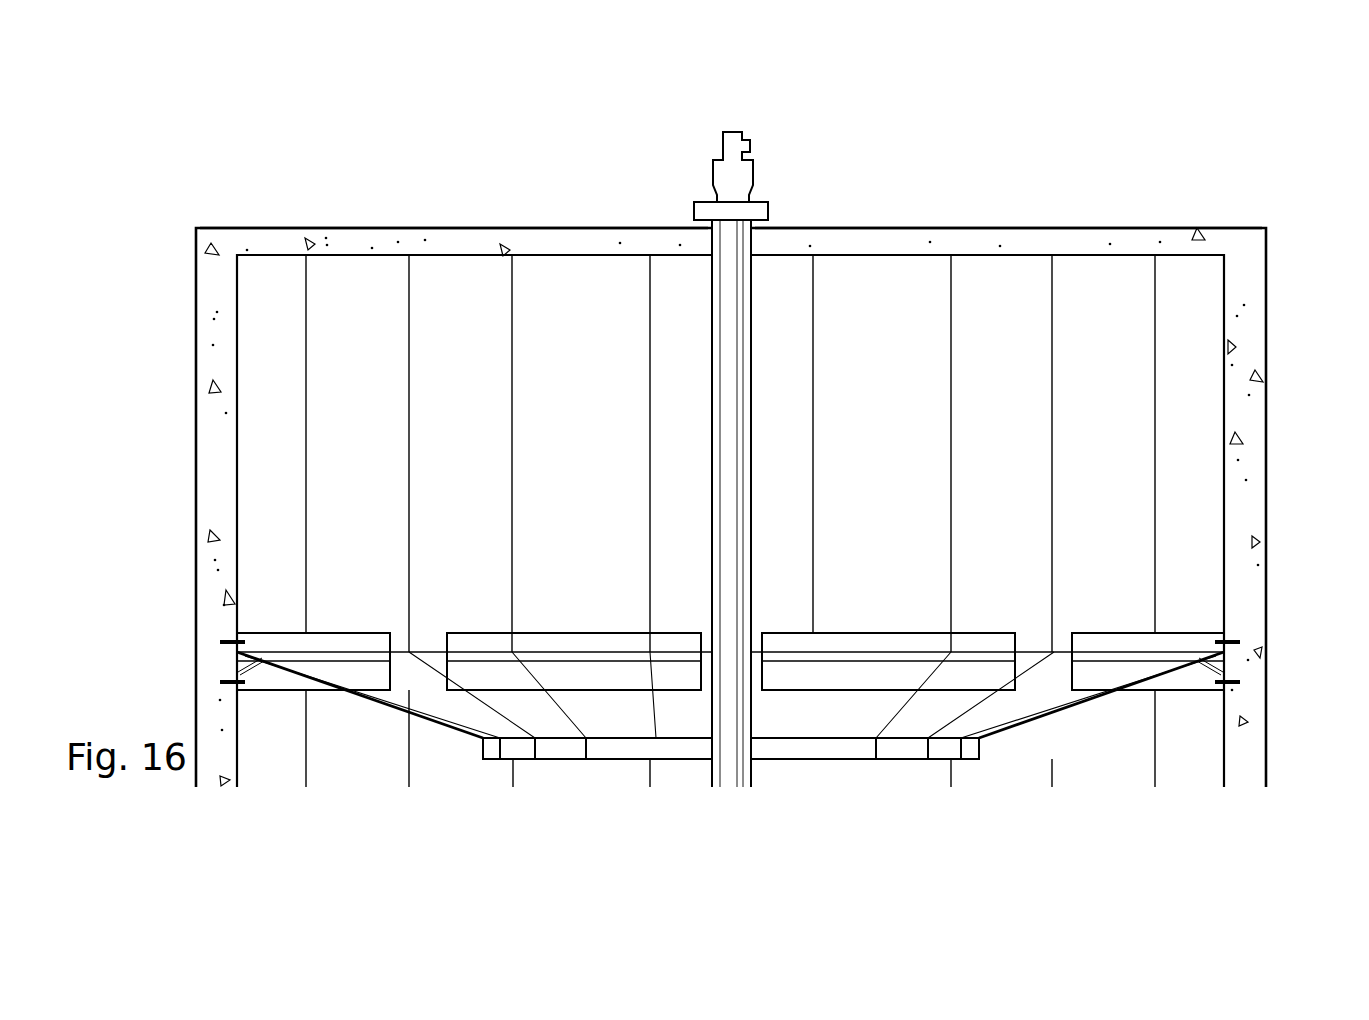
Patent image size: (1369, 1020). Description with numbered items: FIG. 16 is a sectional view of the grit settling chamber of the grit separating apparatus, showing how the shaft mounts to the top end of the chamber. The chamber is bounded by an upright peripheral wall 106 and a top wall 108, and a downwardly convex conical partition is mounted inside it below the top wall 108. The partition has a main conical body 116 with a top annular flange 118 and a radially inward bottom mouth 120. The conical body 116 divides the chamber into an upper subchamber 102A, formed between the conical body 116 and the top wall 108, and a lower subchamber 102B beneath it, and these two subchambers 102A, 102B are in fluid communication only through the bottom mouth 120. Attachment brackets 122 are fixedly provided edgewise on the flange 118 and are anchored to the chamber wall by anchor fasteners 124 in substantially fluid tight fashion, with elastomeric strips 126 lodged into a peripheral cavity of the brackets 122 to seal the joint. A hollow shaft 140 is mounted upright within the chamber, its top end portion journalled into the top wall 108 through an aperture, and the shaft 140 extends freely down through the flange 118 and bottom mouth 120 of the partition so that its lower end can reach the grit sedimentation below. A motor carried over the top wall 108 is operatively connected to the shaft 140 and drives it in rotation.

The upper subchamber 102A is at (608, 385).
The lower subchamber 102B is at (373, 758).
The upright peripheral wall 106 is at (208, 425).
The top wall 108 is at (461, 243).
The main conical body 116 is at (868, 723).
The top annular flange 118 is at (428, 660).
The bottom mouth 120 is at (850, 750).
The attachment brackets 122 is at (853, 640).
The anchor fasteners 124 is at (228, 682).
The elastomeric strips 126 is at (1212, 660).
The hollow shaft 140 is at (732, 355).